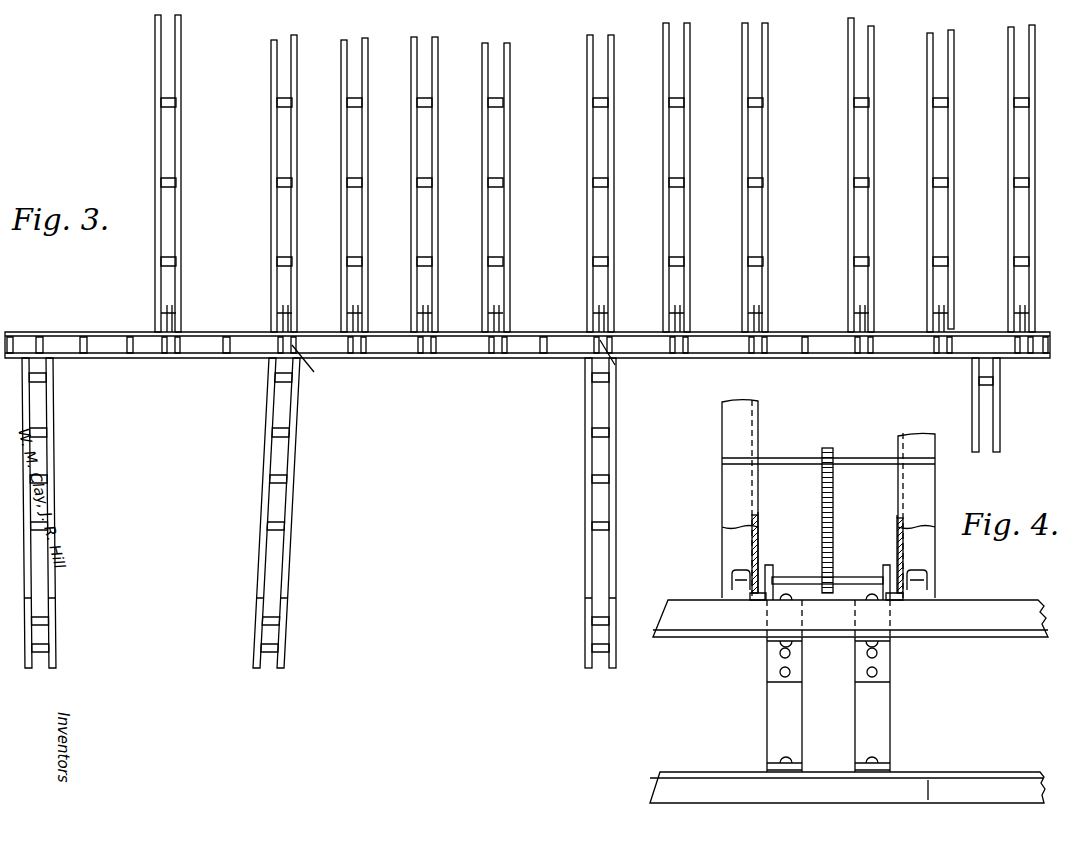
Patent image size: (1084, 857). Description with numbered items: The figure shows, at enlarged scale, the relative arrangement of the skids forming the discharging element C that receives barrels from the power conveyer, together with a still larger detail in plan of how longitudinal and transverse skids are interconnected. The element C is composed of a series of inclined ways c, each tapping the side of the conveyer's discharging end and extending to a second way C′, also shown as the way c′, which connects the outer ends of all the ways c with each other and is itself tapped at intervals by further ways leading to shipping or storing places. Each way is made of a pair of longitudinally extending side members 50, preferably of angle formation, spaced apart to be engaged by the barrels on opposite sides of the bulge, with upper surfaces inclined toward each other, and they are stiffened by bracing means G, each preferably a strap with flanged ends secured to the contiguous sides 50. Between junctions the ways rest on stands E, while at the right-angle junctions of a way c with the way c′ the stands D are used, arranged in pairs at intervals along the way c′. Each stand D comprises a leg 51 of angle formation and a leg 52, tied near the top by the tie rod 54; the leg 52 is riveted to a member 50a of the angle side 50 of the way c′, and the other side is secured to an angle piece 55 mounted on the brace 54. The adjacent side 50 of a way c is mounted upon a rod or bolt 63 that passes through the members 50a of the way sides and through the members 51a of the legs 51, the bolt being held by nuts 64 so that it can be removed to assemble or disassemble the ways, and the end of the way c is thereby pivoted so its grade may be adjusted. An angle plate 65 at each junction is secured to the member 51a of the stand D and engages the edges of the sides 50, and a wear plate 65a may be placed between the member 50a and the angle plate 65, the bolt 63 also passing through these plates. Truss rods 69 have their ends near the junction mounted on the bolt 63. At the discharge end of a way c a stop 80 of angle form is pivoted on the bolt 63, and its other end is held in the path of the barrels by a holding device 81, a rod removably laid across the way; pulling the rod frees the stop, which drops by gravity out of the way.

In FIG. 3, the side member 50 is at (155, 154).
In FIG. 4, the side member 50 is at (728, 492).
In FIG. 3, the bracing or stiffening means G is at (176, 260).
In FIG. 3, the discharging element C is at (540, 207).
In FIG. 3, the skid or skid-section c is at (272, 243).
In FIG. 4, the skid or skid-section c is at (825, 421).
In FIG. 3, the second way C′ is at (192, 357).
In FIG. 3, the stand E is at (588, 483).
In FIG. 3, the stand D is at (350, 345).
In FIG. 4, the stand D is at (844, 704).
In FIG. 3, the rod or bolt 63 is at (860, 327).
In FIG. 4, the rod or bolt 63 is at (842, 573).
In FIG. 3, the holding device 81 is at (872, 312).
In FIG. 4, the holding device 81 is at (865, 457).
In FIG. 3, the stop 80 is at (940, 310).
In FIG. 4, the stop 80 is at (840, 480).
In FIG. 4, the wear plate 65a is at (760, 518).
In FIG. 4, the member of angle-side 50a is at (757, 541).
In FIG. 4, the truss rod 69 is at (750, 548).
In FIG. 4, the member of leg 51a is at (772, 570).
In FIG. 4, the nut or confining device 64 is at (747, 583).
In FIG. 4, the angle plate 65 is at (745, 600).
In FIG. 4, the leg 51 is at (858, 597).
In FIG. 4, the tie rod 54 is at (883, 658).
In FIG. 4, the angle piece 55 is at (780, 670).
In FIG. 4, the leg 52 is at (867, 768).
In FIG. 4, the second way c′ is at (950, 699).